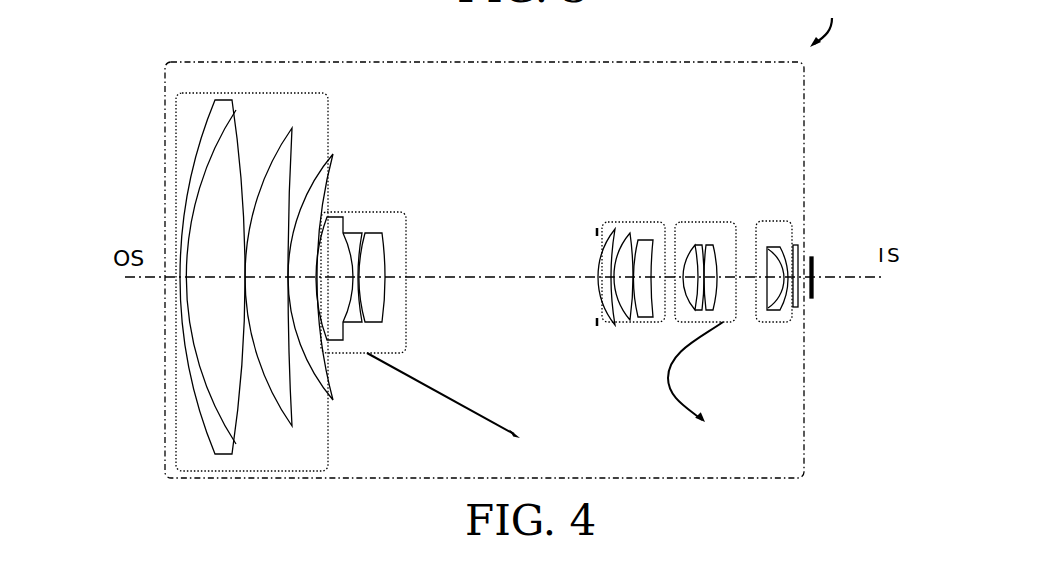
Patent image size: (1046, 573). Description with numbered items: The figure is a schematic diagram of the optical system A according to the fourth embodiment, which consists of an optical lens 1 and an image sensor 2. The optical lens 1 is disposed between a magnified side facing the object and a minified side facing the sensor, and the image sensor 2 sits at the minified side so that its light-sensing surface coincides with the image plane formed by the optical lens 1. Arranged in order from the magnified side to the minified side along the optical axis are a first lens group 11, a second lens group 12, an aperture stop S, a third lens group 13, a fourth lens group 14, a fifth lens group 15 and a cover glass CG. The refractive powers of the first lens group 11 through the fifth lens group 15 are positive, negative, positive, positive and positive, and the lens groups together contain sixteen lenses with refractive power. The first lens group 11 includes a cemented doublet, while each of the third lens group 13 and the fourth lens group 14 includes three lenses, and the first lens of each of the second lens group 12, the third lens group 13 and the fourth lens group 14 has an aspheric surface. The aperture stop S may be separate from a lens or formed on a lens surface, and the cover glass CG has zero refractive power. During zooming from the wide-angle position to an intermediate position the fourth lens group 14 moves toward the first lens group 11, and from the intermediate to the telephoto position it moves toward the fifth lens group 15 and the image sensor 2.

The optical lens 1 is at (387, 62).
The image sensor 2 is at (813, 276).
The first lens group 11 is at (328, 130).
The second lens group 12 is at (387, 211).
The third lens group 13 is at (624, 222).
The fourth lens group 14 is at (717, 222).
The fifth lens group 15 is at (773, 221).
The aperture stop S is at (597, 228).
The cover glass CG is at (798, 246).
The optical system A is at (838, 14).